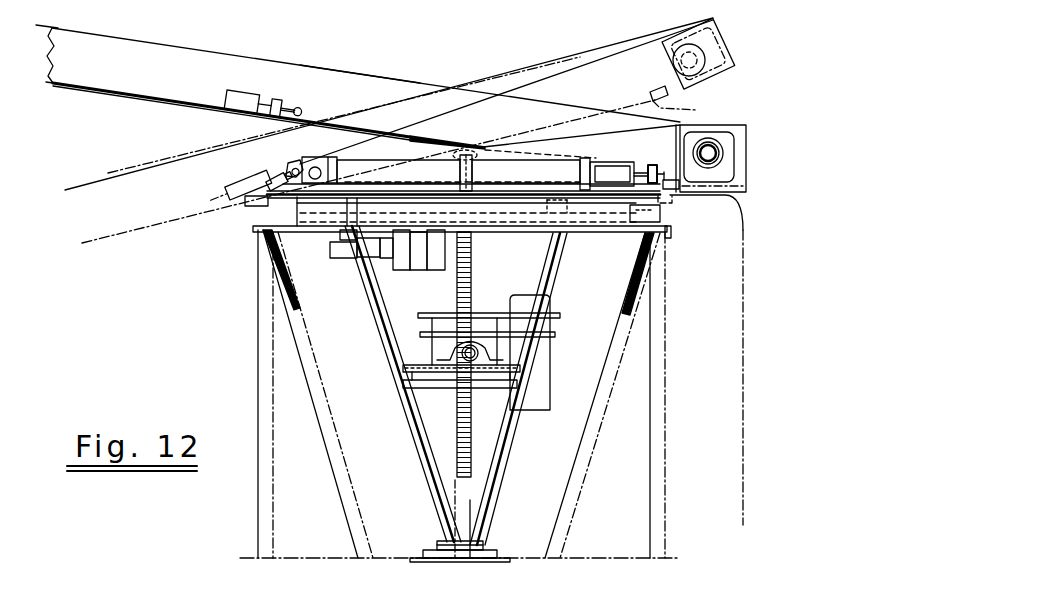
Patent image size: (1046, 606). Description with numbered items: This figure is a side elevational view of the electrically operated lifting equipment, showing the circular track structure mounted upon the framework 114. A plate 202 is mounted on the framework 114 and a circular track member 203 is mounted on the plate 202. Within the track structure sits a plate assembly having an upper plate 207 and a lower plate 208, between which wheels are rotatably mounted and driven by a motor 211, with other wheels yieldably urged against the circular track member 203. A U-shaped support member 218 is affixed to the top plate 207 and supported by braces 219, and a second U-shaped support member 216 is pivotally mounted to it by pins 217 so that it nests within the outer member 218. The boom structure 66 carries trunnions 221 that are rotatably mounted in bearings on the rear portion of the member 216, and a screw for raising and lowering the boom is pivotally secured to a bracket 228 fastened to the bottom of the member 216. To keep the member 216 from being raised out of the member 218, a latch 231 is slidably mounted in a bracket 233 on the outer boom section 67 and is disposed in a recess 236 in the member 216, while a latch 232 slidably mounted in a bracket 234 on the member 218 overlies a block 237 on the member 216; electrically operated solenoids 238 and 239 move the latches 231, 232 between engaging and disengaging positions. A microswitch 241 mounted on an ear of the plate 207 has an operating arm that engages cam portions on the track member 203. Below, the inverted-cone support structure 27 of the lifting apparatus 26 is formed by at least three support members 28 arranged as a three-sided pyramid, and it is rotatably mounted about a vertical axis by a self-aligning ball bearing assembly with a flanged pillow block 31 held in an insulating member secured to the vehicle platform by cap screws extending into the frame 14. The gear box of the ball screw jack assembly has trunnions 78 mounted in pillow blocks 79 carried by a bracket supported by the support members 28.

The boom structure 66 is at (197, 8).
The outer boom section 67 is at (365, 75).
The solenoid 238 is at (243, 92).
The bracket 233 is at (282, 97).
The latch 231 is at (305, 103).
The bracket 228 is at (445, 143).
The upper plate 207 is at (368, 178).
The pins 217 is at (320, 160).
The recess 236 is at (300, 162).
The U-shaped support member 218 is at (525, 158).
The braces 219 is at (476, 178).
The solenoid 239 is at (607, 172).
The bracket 234 is at (650, 163).
The latch 232 is at (667, 181).
The trunnions 221 is at (718, 152).
The U-shaped support member 216 is at (747, 183).
The block 237 is at (675, 104).
The circular track member 203 is at (658, 213).
The plate 202 is at (672, 231).
The microswitch 241 is at (257, 206).
The lower plate 208 is at (460, 394).
The motor 211 is at (432, 266).
The frame 14 is at (473, 290).
The trunnions 78 is at (458, 351).
The pillow blocks 79 is at (443, 378).
The lifting apparatus 26 is at (550, 383).
The support members 28 is at (507, 442).
The support structure 27 is at (506, 480).
The flanged pillow block 31 is at (494, 538).
The framework 114 is at (660, 297).